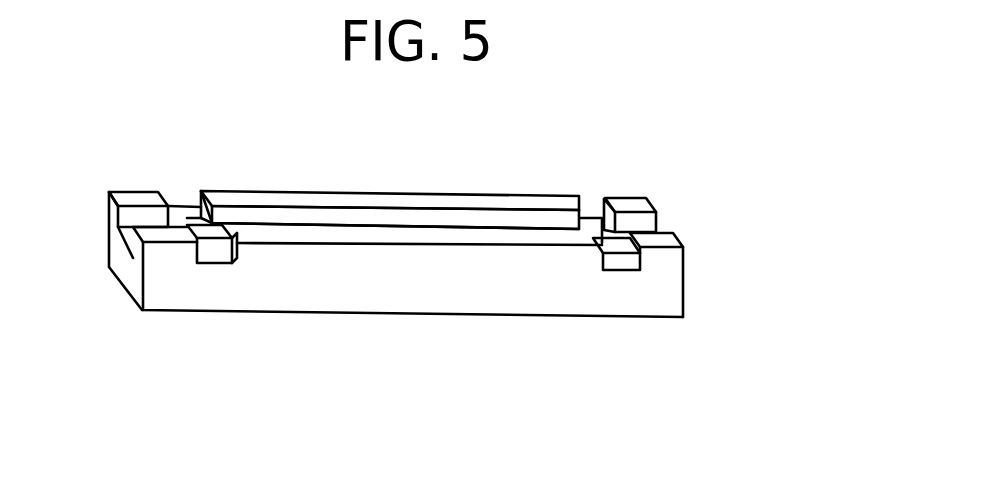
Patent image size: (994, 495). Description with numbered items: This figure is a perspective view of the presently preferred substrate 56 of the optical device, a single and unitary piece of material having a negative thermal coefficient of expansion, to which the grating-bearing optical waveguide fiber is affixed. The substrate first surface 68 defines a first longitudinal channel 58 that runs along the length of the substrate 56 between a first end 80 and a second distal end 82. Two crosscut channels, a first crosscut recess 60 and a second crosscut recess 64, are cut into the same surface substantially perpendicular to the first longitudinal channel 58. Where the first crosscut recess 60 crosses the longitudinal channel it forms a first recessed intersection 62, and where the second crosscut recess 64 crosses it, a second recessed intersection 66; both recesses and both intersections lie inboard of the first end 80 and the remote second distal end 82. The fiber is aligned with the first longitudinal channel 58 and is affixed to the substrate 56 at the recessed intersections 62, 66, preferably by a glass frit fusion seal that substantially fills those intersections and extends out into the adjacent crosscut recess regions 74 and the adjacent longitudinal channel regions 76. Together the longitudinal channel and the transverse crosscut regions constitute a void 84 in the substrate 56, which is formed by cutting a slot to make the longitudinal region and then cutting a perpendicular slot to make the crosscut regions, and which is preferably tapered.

The substrate 56 is at (392, 178).
The first longitudinal channel 58 is at (122, 222).
The first crosscut recess 60 is at (182, 197).
The first recessed intersection 62 is at (205, 243).
The second crosscut recess 64 is at (584, 198).
The second recessed intersection 66 is at (614, 248).
The substrate first surface 68 is at (312, 194).
The crosscut recess regions 74 is at (600, 193).
The longitudinal channel regions 76 is at (212, 196).
The first end 80 is at (110, 263).
The second distal end 82 is at (662, 212).
The void 84 is at (470, 216).